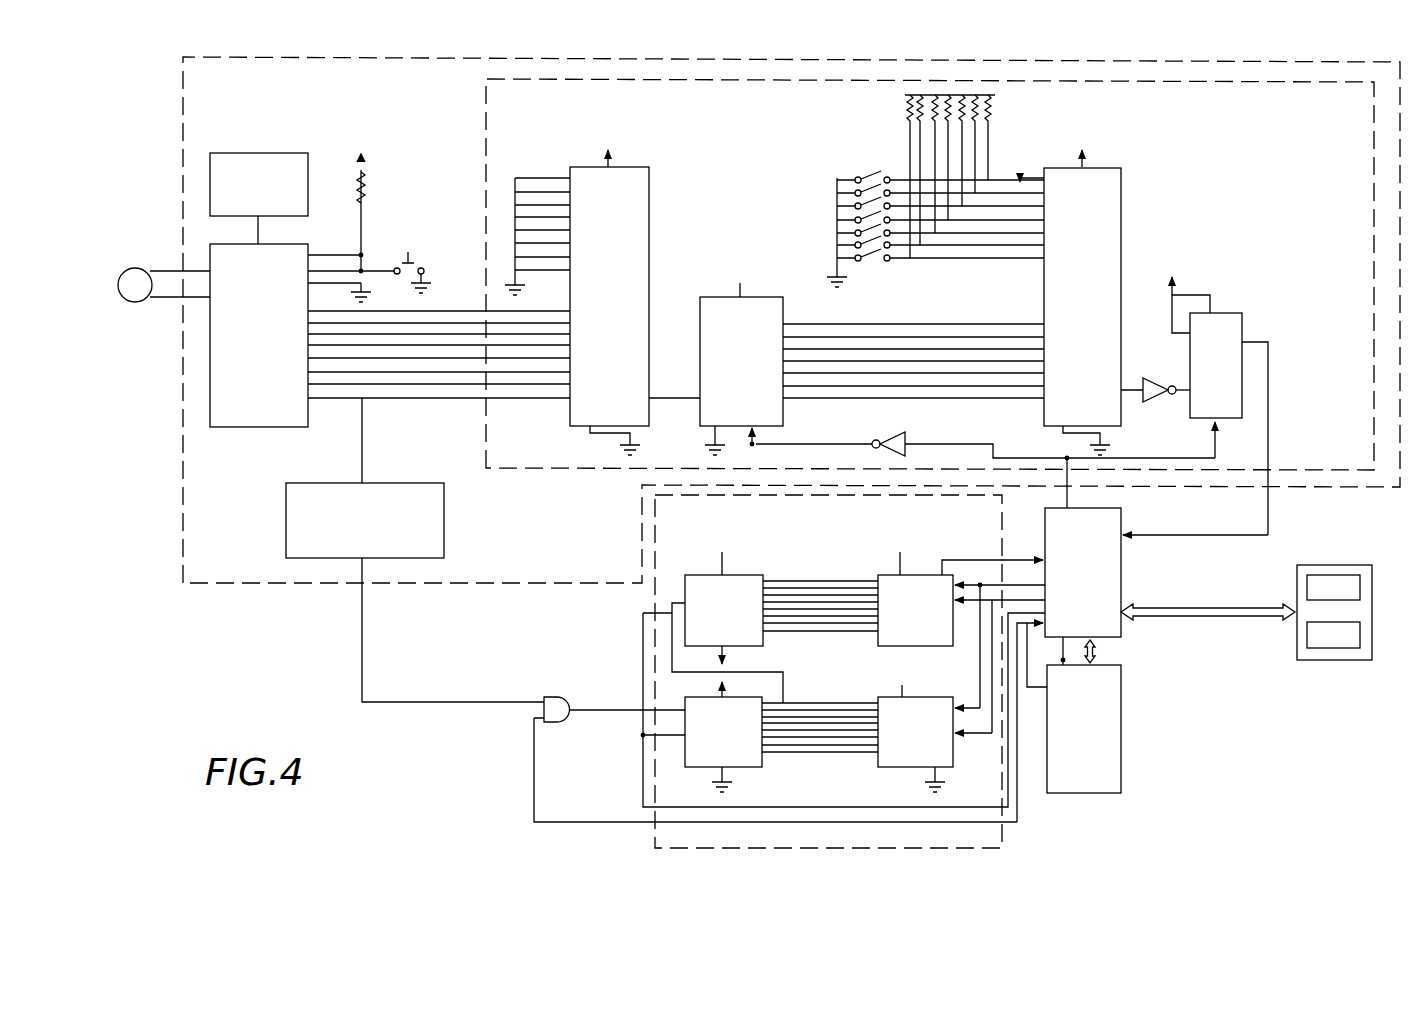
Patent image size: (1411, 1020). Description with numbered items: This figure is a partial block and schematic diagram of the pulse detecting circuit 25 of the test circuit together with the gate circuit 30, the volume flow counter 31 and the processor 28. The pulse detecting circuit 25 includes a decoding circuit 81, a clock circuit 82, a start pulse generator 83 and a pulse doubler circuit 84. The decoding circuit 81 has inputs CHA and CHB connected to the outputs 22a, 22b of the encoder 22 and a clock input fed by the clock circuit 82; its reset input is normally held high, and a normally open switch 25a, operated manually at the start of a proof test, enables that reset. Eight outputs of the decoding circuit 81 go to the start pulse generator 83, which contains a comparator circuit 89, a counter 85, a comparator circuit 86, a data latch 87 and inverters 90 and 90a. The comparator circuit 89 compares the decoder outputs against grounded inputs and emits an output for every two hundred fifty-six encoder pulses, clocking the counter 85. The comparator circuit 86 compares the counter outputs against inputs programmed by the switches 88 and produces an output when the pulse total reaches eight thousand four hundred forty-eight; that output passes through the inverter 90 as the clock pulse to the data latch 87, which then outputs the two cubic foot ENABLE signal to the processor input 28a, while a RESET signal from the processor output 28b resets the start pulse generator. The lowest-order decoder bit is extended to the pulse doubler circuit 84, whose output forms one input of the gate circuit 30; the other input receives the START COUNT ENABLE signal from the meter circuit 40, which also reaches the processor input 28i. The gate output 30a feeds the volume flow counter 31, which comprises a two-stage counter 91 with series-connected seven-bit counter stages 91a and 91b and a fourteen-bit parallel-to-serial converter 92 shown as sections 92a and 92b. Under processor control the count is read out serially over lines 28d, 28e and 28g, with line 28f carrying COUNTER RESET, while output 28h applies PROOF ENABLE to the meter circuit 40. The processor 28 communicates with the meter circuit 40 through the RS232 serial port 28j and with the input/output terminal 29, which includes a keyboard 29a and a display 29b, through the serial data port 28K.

The pulse detecting circuit 25 is at (791, 320).
The normally open switch 25a is at (411, 251).
The encoder 22 is at (128, 298).
The encoder output 22a is at (158, 272).
The encoder output 22b is at (167, 297).
The decoding circuit 81 is at (217, 427).
The clock circuit 82 is at (263, 152).
The start pulse generator 83 is at (930, 274).
The pulse doubler circuit 84 is at (286, 520).
The counter 85 is at (719, 297).
The comparator circuit 86 is at (1121, 190).
The data latch 87 is at (1242, 316).
The switches 88 is at (864, 172).
The comparator circuit 89 is at (649, 180).
The inverter 90 is at (1155, 378).
The inverter 90a is at (893, 432).
The processor 28 is at (1133, 576).
The processor input 28a is at (1268, 525).
The processor output 28b is at (1070, 492).
The processor input/output 28d is at (976, 583).
The processor input/output 28e is at (1012, 597).
The processor input/output 28f is at (641, 757).
The processor output 28g is at (1030, 557).
The processor output 28h is at (1041, 722).
The processor input 28i is at (1033, 690).
The serial port 28j is at (1100, 668).
The serial data port 28K is at (1205, 608).
The input/output terminal 29 is at (1372, 646).
The keyboard 29a is at (1333, 587).
The display 29b is at (1333, 635).
The gate circuit 30 is at (555, 697).
The gate circuit output 30a is at (630, 709).
The volume flow counter 31 is at (838, 541).
The meter circuit 40 is at (1084, 729).
The two-stage counter 91 is at (686, 565).
The counter stage 91a is at (705, 767).
The counter stage 91b is at (752, 575).
The parallel-to-serial converter 92 is at (926, 650).
The parallel-to-serial converter section 92a is at (915, 728).
The parallel-to-serial converter section 92b is at (915, 589).